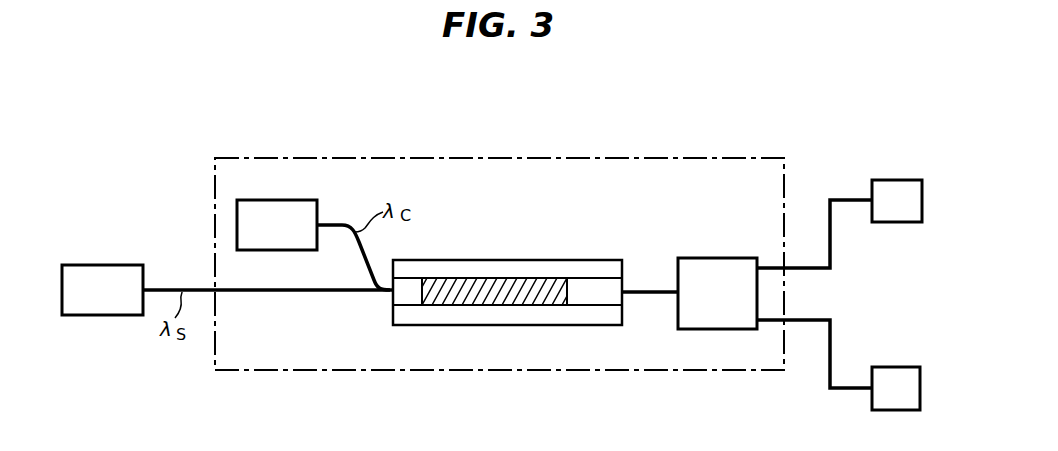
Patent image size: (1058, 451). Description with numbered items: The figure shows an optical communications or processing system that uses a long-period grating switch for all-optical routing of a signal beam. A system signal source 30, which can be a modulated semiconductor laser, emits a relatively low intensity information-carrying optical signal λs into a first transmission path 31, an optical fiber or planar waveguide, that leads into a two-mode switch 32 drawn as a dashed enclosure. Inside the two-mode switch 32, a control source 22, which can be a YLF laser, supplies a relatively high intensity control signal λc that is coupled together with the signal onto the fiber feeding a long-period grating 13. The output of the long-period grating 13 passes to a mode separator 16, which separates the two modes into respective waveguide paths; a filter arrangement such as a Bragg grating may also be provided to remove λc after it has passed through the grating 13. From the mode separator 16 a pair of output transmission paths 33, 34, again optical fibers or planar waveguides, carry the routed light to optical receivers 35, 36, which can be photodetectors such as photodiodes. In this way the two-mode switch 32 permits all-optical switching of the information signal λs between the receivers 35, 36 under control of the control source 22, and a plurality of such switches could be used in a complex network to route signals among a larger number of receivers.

The long-period grating 13 is at (518, 278).
The mode separator 16 is at (712, 258).
The control source 22 is at (282, 200).
The system signal source 30 is at (90, 265).
The first transmission path 31 is at (168, 288).
The two-mode switch 32 is at (292, 370).
The output transmission path 33 is at (848, 200).
The output transmission path 34 is at (828, 380).
The optical receiver 35 is at (897, 367).
The optical receiver 36 is at (897, 180).